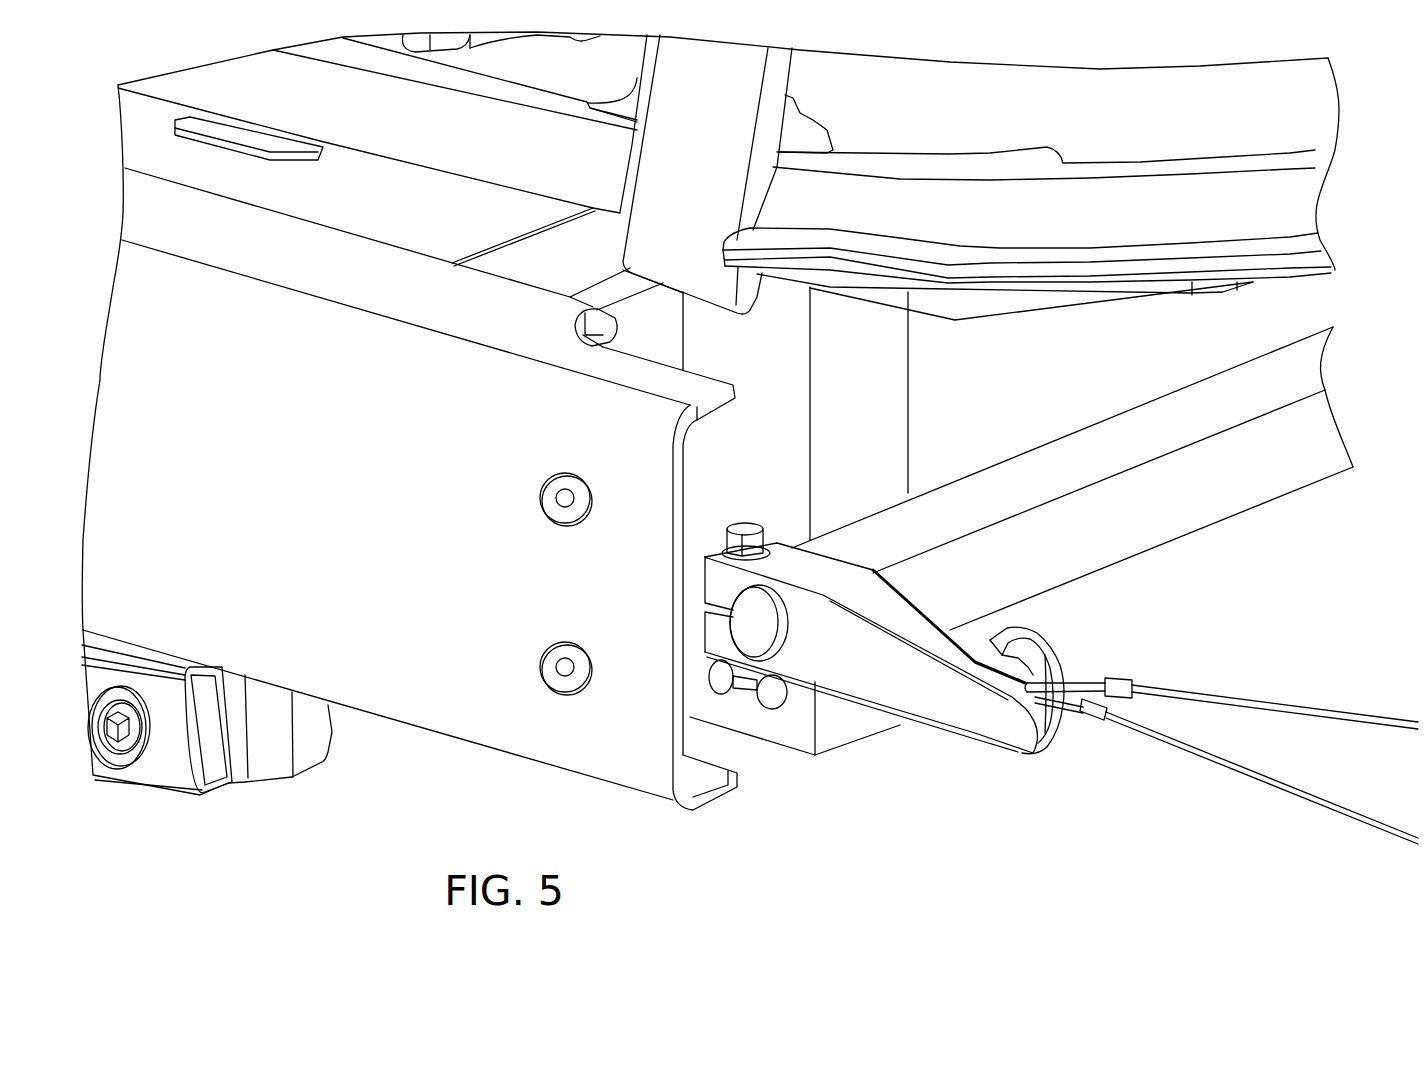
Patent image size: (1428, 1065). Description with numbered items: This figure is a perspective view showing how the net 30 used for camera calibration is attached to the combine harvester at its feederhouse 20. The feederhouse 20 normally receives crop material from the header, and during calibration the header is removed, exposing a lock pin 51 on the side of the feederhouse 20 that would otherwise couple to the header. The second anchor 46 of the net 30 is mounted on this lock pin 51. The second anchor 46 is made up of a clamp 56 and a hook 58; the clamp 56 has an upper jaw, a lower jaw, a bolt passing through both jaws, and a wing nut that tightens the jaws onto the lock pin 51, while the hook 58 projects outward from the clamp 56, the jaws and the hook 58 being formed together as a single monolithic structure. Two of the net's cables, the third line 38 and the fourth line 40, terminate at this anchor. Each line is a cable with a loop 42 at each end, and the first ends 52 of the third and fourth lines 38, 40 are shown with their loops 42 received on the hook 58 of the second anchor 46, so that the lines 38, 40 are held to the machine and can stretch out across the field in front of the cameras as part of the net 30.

The feederhouse 20 is at (605, 445).
The net 30 is at (848, 705).
The third line 38 is at (1333, 708).
The fourth line 40 is at (1293, 795).
The loop 42 is at (1068, 667).
The second anchor 46 is at (720, 695).
The lock pin 51 is at (753, 628).
The first end 52 is at (1103, 678).
The clamp 56 is at (717, 580).
The hook 58 is at (1035, 632).